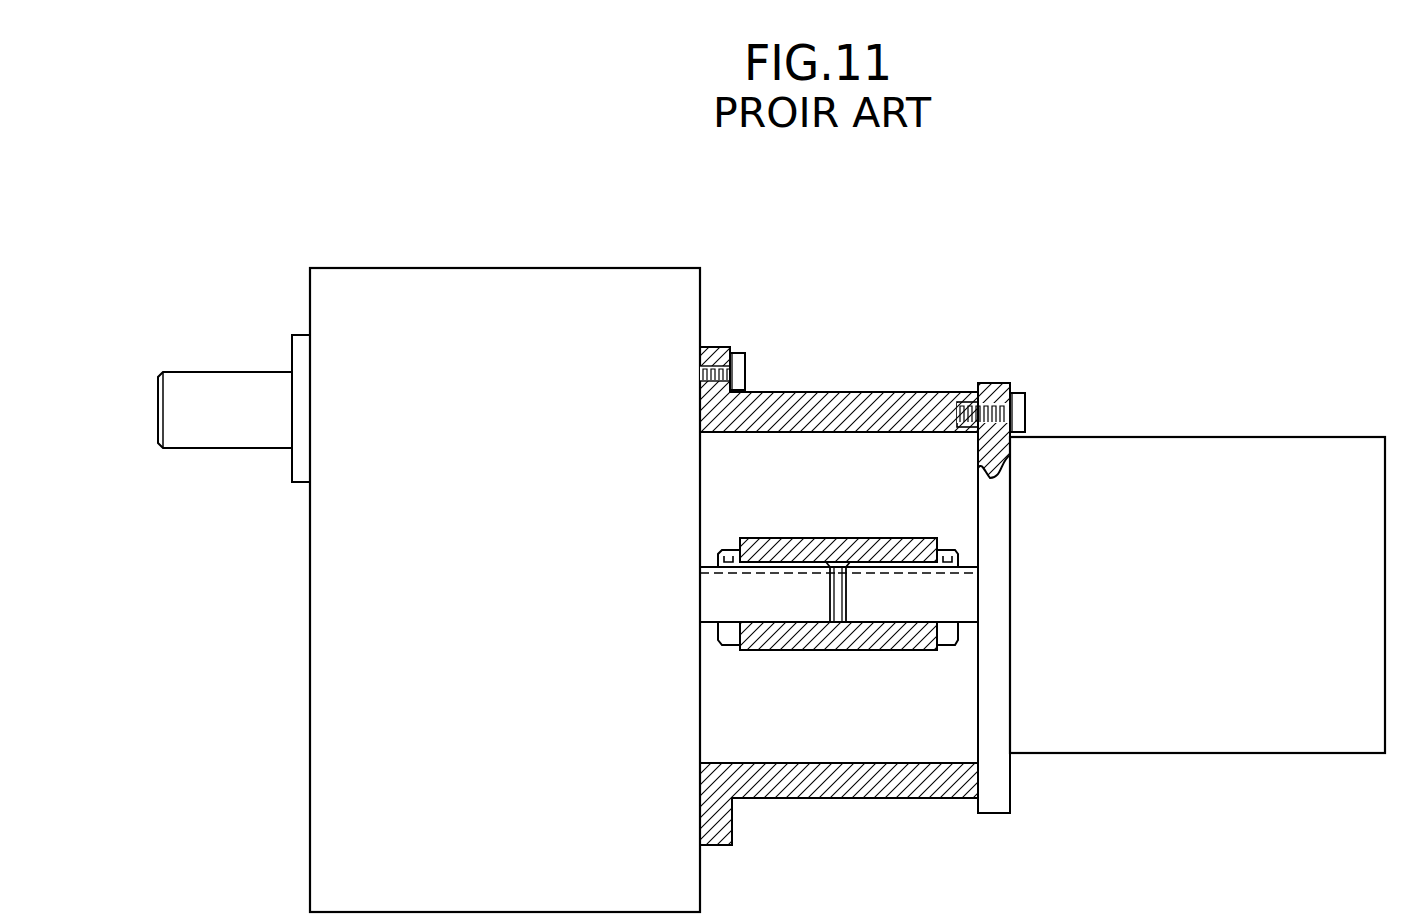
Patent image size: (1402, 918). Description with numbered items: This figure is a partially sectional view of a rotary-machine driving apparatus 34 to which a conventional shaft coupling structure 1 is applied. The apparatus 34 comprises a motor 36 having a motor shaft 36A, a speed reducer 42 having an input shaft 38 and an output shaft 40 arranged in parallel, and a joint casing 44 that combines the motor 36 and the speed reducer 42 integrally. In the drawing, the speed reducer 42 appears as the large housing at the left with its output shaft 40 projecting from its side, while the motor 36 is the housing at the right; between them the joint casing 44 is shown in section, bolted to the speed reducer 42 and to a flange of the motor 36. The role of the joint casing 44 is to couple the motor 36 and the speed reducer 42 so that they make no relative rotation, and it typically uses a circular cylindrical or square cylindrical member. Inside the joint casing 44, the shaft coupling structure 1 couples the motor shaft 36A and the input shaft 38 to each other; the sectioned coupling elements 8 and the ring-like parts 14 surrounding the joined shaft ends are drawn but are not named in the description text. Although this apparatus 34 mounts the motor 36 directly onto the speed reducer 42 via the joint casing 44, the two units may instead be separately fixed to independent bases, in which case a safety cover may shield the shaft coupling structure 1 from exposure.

The shaft coupling structure 1 is at (845, 664).
The bearing 8 is at (838, 533).
The retaining ring 14 is at (725, 552).
The rotary-machine driving apparatus 34 is at (1020, 242).
The motor 36 is at (1124, 472).
The motor shaft 36A is at (955, 603).
The input shaft 38 is at (720, 593).
The output shaft 40 is at (215, 378).
The speed reducer 42 is at (495, 298).
The joint casing 44 is at (826, 392).